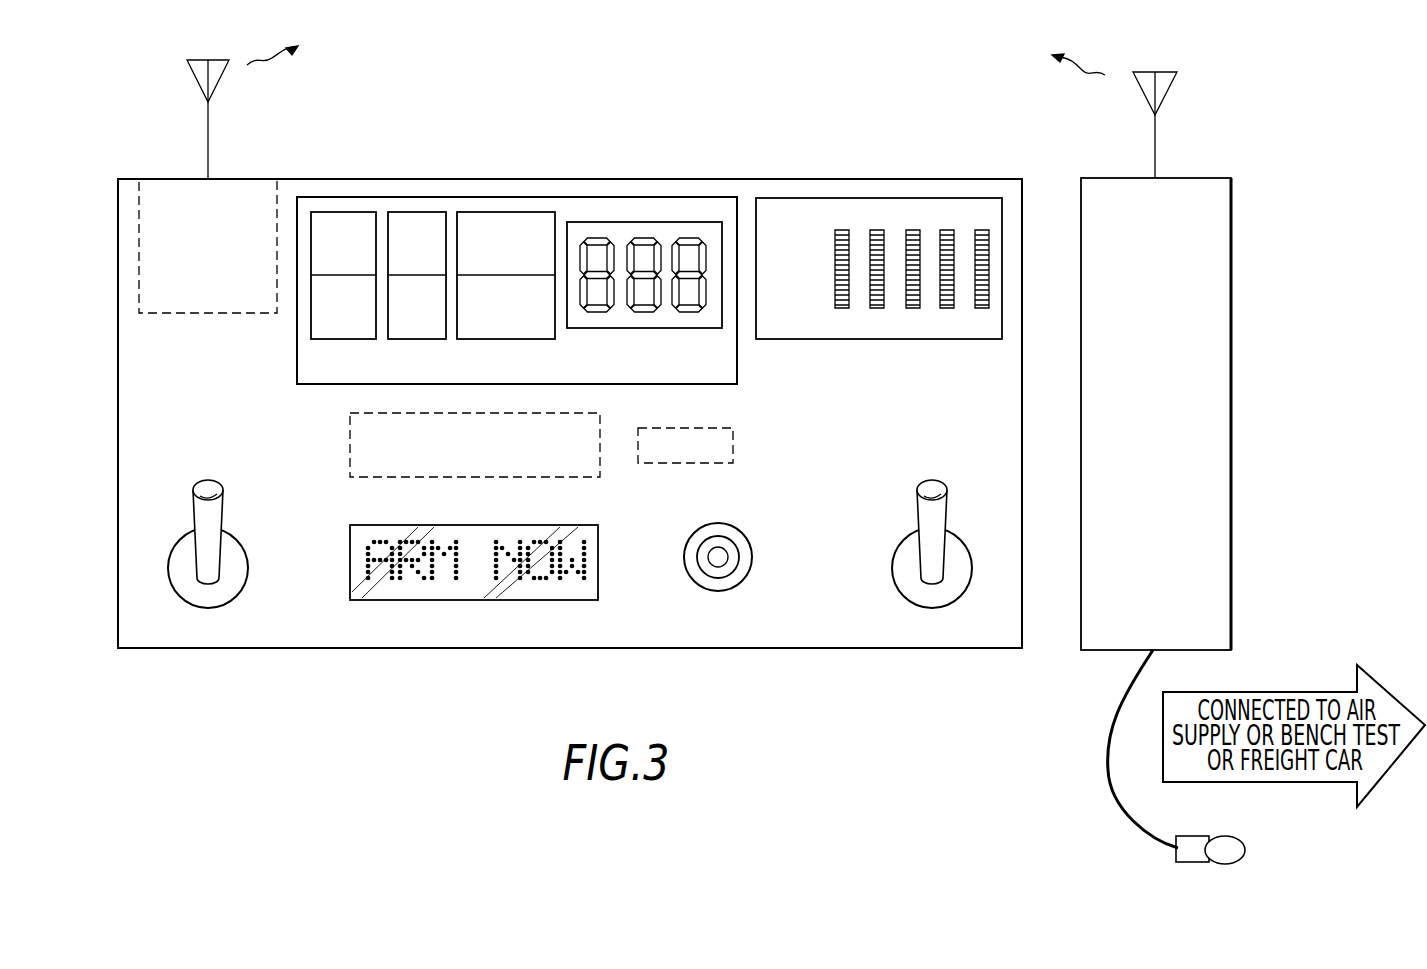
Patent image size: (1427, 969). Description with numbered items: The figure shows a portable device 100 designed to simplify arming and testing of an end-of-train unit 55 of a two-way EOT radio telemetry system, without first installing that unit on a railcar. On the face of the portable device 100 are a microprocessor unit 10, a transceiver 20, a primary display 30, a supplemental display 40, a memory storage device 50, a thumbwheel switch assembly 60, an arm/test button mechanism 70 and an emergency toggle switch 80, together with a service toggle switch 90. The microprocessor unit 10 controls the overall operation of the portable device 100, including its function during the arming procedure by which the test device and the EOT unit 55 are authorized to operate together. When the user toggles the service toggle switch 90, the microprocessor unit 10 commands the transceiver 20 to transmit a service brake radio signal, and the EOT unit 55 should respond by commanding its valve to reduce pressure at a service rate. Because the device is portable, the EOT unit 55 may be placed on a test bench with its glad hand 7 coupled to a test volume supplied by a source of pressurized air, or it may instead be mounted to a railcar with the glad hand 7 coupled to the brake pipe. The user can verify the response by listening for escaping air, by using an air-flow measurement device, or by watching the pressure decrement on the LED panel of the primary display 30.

The portable device 100 is at (279, 672).
The transceiver 20 is at (180, 177).
The primary display 30 is at (637, 206).
The thumbwheel switch assembly 60 is at (931, 206).
The microprocessor unit 10 is at (350, 445).
The memory storage device 50 is at (733, 447).
The service toggle switch 90 is at (243, 551).
The supplemental display 40 is at (427, 600).
The arm/test button mechanism 70 is at (742, 535).
The emergency toggle switch 80 is at (960, 538).
The end-of-train (EOT) unit 55 is at (1231, 334).
The glad hand 7 is at (1246, 848).